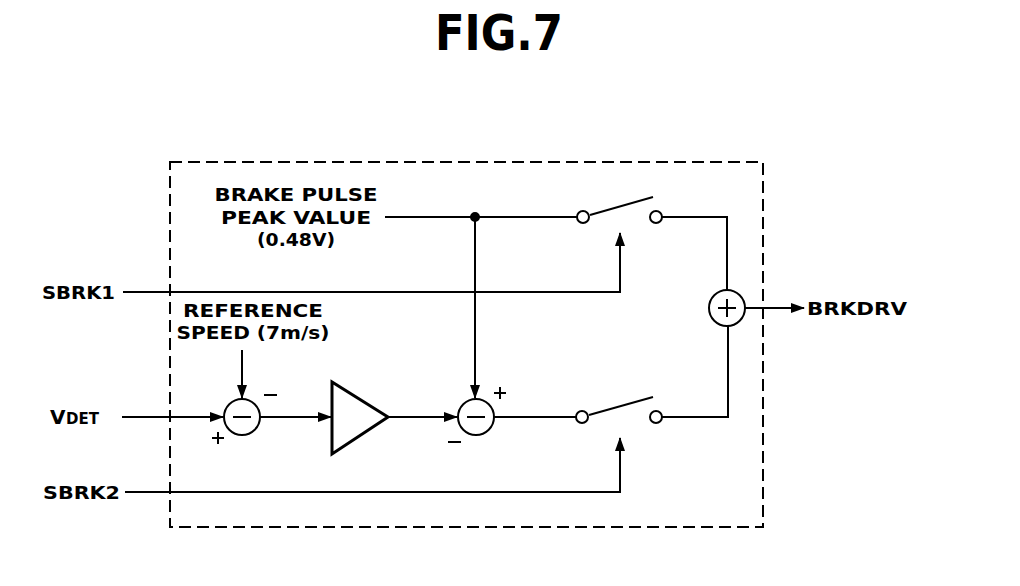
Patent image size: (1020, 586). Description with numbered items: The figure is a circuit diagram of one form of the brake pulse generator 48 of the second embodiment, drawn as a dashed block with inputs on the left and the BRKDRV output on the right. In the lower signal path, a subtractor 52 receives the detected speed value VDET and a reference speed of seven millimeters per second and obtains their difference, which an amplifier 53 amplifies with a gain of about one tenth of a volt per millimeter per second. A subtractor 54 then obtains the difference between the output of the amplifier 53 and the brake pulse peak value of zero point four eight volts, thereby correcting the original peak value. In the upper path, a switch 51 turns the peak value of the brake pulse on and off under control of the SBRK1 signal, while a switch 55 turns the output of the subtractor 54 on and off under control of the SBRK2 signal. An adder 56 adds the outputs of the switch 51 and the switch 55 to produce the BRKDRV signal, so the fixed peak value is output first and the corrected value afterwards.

The brake pulse generator 48 is at (653, 160).
The switch 51 is at (612, 204).
The subtractor 52 is at (256, 432).
The amplifier 53 is at (368, 433).
The subtractor 54 is at (497, 428).
The switch 55 is at (612, 405).
The adder 56 is at (708, 300).